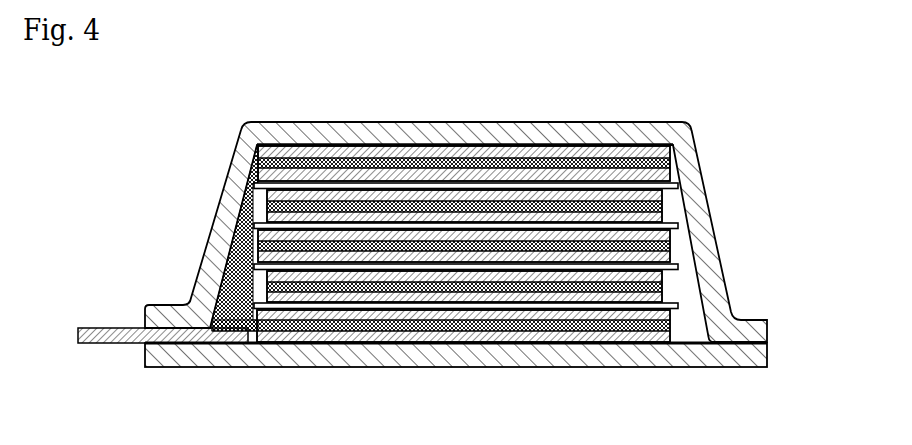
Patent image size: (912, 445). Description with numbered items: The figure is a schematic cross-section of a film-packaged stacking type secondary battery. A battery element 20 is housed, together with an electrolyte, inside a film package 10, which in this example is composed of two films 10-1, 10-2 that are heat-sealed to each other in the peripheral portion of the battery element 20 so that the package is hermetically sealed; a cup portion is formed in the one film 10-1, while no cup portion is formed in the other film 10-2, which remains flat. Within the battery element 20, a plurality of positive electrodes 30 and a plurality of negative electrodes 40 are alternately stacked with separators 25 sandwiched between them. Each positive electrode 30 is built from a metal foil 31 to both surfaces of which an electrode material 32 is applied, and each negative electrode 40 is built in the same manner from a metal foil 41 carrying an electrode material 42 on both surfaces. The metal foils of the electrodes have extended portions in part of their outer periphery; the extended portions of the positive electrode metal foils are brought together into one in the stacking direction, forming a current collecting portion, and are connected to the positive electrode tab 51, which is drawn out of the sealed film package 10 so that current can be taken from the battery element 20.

The film package 10 is at (503, 268).
The film 10-1 is at (753, 320).
The film 10-2 is at (479, 377).
The battery element 20 is at (342, 344).
The separator 25 is at (494, 249).
The positive electrode 30 is at (246, 210).
The metal foil 31 is at (452, 198).
The electrode material 32 is at (497, 218).
The negative electrode 40 is at (680, 181).
The metal foil 41 is at (545, 160).
The electrode material 42 is at (594, 178).
The positive electrode tab 51 is at (112, 328).